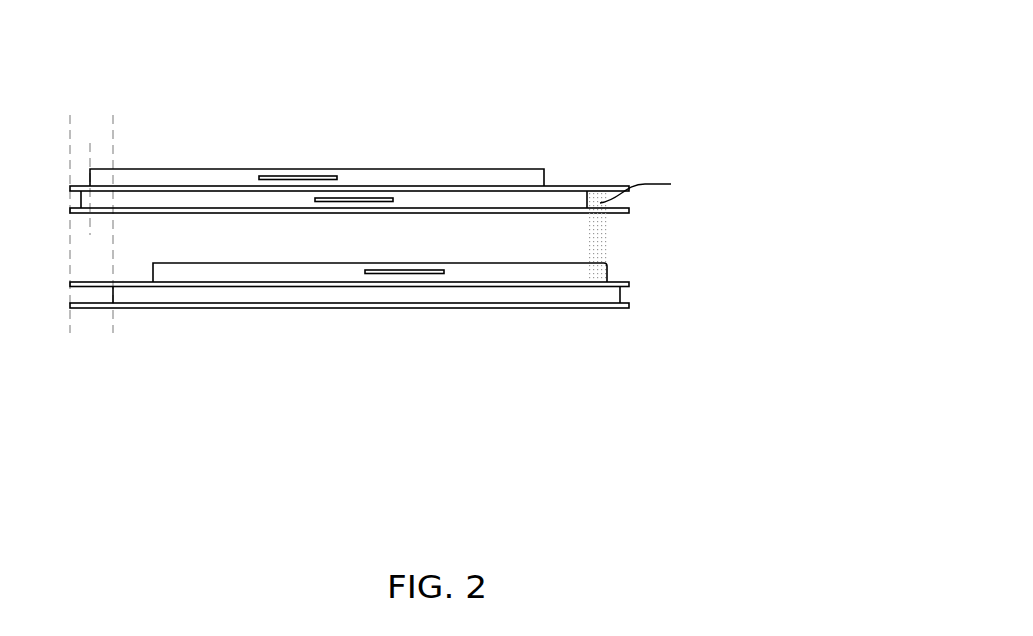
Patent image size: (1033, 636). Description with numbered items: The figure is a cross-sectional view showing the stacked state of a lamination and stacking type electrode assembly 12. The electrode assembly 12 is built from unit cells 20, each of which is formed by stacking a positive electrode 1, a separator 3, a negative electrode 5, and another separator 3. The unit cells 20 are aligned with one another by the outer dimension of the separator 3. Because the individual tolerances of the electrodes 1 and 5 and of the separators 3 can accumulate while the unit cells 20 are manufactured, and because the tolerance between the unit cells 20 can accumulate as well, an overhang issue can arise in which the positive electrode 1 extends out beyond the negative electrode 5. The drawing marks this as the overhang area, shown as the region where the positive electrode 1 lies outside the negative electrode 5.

The lamination and stacking type electrode assembly 12 is at (37, 52).
The unit cell 20 is at (653, 293).
The positive electrode 1 is at (193, 272).
The separator 3 is at (70, 283).
The negative electrode 5 is at (135, 295).